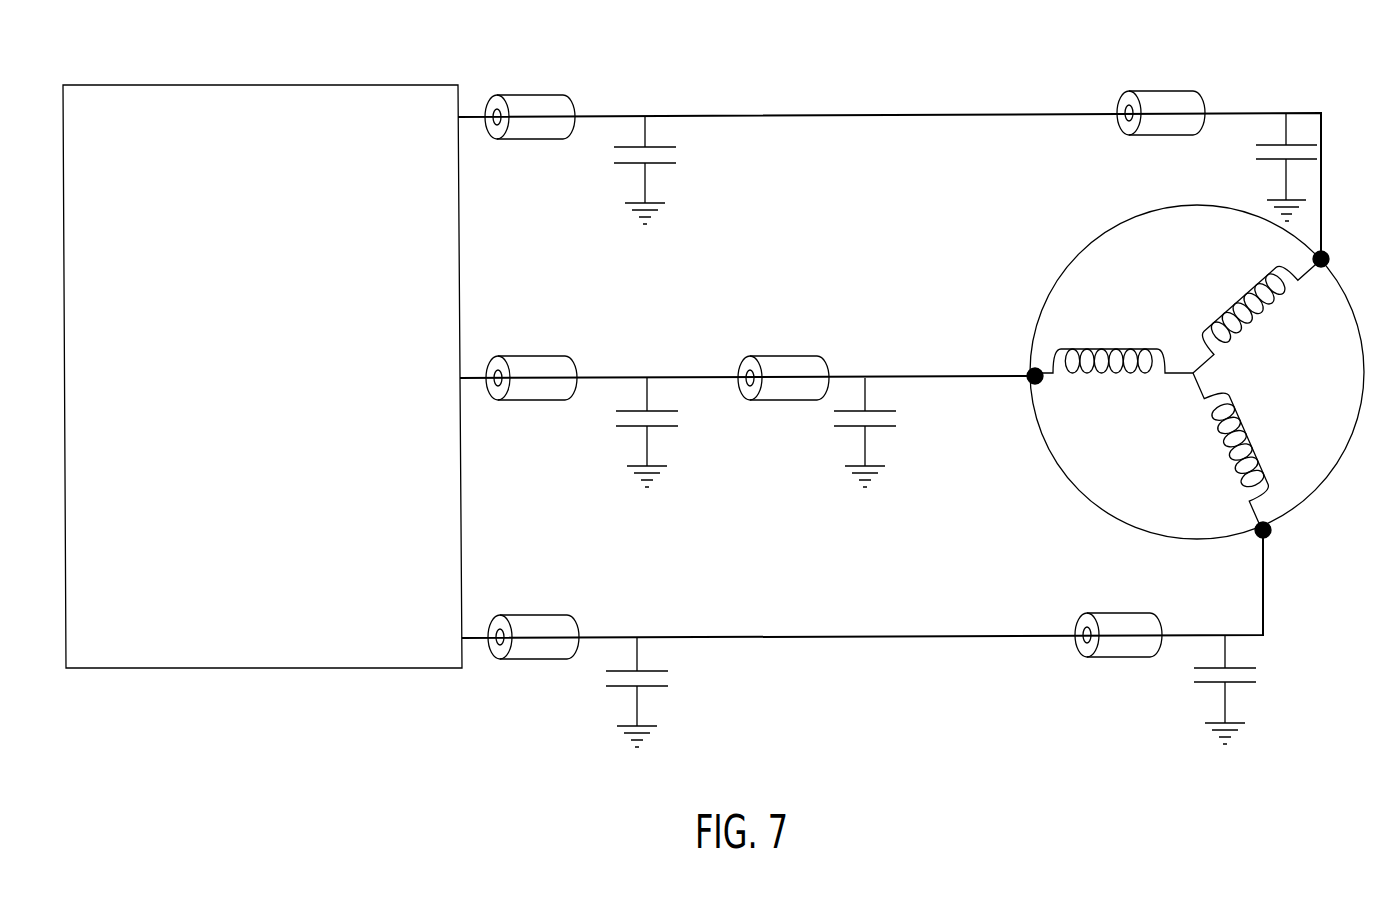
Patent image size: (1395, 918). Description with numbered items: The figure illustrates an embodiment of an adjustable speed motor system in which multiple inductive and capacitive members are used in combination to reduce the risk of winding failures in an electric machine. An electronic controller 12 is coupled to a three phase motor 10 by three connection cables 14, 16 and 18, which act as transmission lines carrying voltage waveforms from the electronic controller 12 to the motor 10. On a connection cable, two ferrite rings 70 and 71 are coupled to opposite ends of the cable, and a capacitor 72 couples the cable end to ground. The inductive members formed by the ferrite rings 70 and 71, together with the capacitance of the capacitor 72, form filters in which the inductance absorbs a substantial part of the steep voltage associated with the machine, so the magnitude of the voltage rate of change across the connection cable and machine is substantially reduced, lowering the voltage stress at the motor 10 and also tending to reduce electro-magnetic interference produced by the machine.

The three phase motor 10 is at (1205, 385).
The electronic controller 12 is at (262, 404).
The connection cable 14 is at (889, 186).
The connection cable 16 is at (747, 406).
The connection cable 18 is at (862, 613).
The ferrite ring 70 is at (1180, 86).
The ferrite ring 71 is at (518, 86).
The capacitor 72 is at (1311, 151).